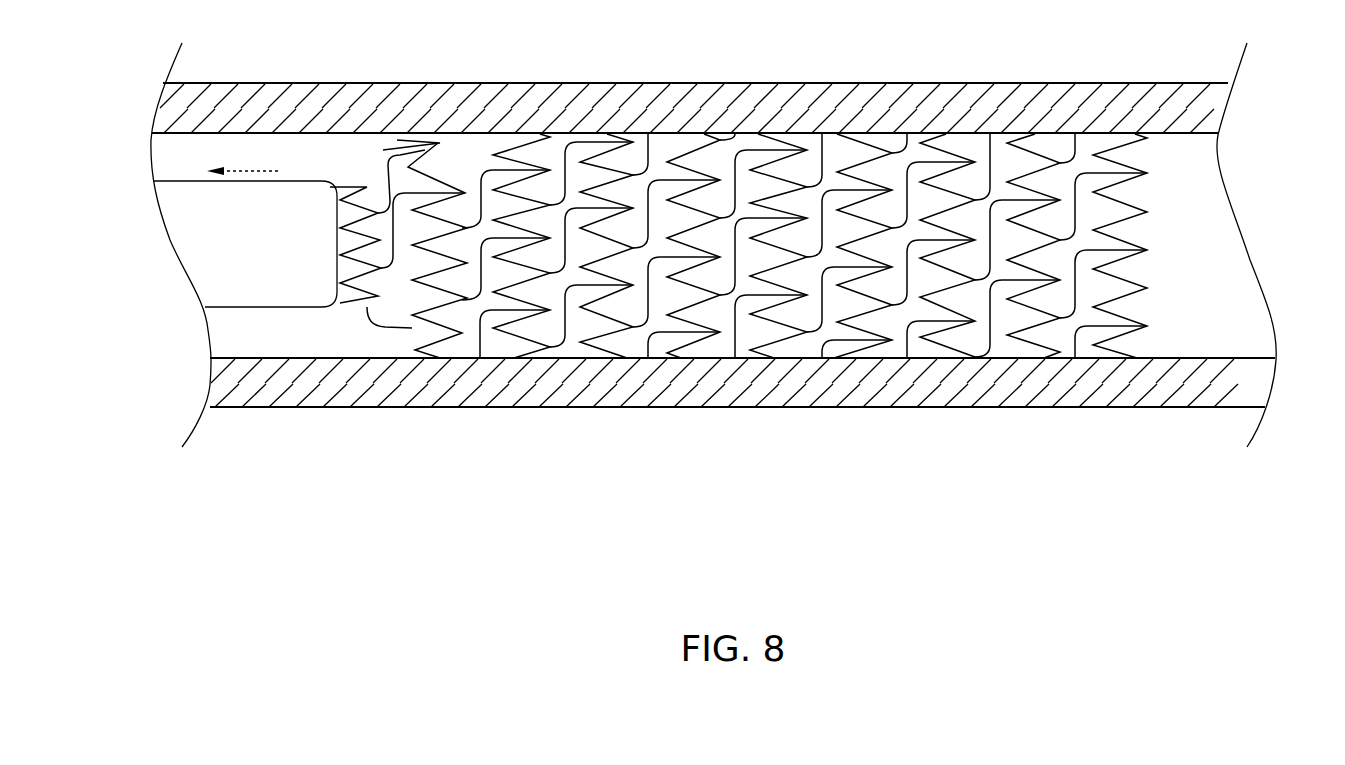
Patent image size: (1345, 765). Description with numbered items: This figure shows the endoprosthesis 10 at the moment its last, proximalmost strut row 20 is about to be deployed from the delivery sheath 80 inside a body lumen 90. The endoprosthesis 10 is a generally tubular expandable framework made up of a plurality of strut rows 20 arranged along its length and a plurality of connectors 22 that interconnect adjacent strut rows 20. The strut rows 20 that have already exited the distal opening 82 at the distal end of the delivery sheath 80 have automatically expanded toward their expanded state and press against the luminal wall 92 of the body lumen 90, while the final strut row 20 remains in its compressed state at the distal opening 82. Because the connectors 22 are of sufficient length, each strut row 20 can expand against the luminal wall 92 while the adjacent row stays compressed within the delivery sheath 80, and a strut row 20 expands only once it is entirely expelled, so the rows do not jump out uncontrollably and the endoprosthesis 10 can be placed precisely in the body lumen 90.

The endoprosthesis 10 is at (791, 253).
The strut row 20 is at (341, 183).
The connector 22 is at (388, 190).
The delivery sheath 80 is at (244, 262).
The distal opening 82 is at (336, 248).
The body lumen 90 is at (725, 220).
The luminal wall 92 is at (1187, 137).